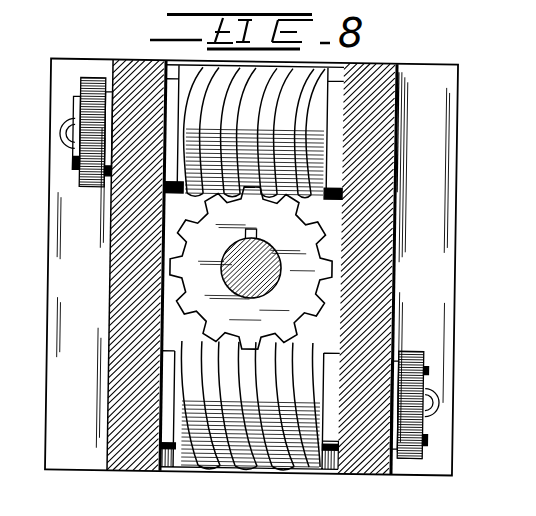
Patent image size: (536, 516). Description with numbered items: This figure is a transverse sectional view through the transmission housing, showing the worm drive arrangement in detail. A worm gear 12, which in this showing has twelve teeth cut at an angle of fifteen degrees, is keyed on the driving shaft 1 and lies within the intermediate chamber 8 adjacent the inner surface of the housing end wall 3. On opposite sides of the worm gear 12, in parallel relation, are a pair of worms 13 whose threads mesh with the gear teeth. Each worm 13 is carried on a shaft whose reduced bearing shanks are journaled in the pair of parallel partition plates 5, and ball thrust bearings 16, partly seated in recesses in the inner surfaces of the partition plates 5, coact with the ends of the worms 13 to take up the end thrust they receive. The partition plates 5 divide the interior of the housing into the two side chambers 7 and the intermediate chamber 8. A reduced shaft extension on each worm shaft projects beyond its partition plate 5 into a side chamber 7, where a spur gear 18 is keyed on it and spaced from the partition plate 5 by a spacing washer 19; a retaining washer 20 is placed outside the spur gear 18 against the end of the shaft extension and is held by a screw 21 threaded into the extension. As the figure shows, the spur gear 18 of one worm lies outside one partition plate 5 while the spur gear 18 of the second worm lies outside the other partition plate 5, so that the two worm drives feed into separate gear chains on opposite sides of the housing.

The driving shaft 1 is at (240, 265).
The end wall 3 is at (436, 82).
The partition plate 5 is at (130, 451).
The side chamber 7 is at (98, 80).
The intermediate chamber 8 is at (340, 458).
The worm gear 12 is at (288, 298).
The worm 13 is at (300, 167).
The ball thrust bearing 16 is at (170, 89).
The spur gear 18 is at (96, 176).
The spacing washer 19 is at (98, 156).
The retaining washer 20 is at (75, 103).
The screw 21 is at (66, 121).